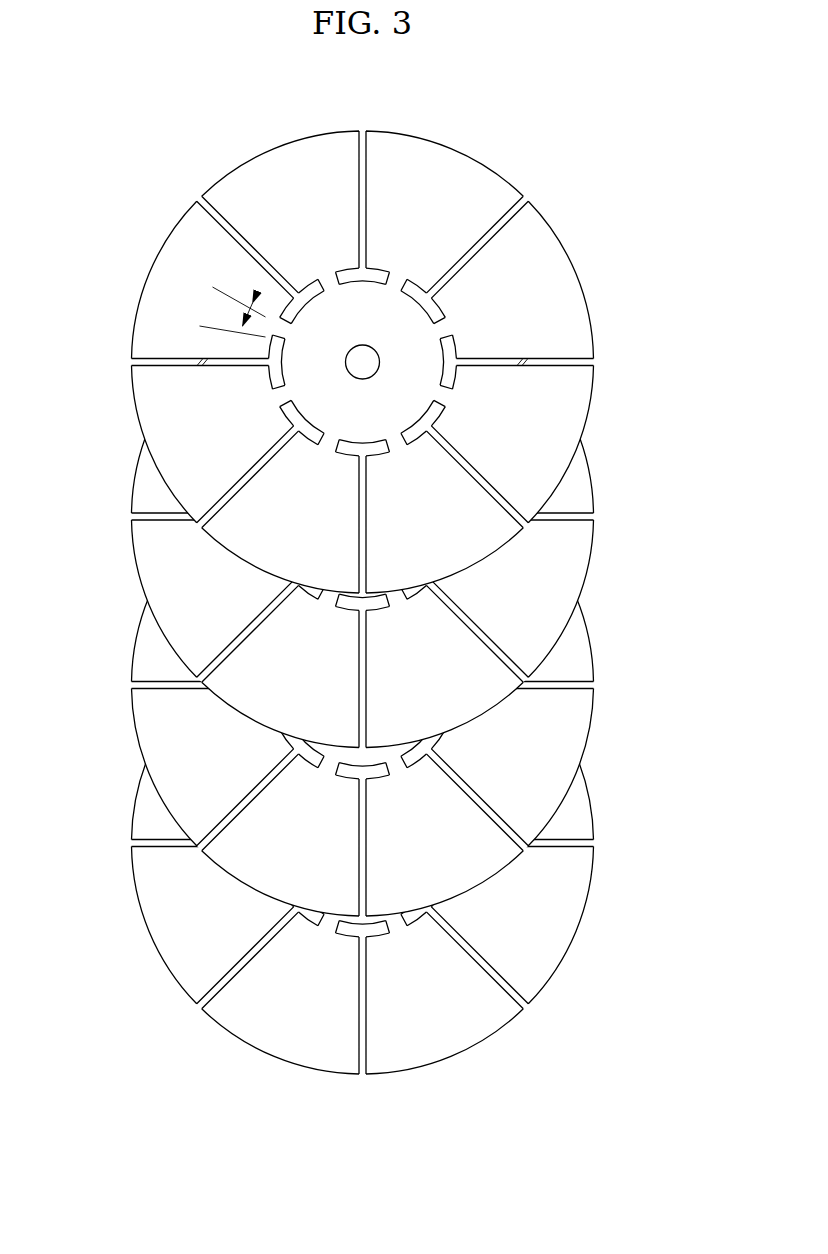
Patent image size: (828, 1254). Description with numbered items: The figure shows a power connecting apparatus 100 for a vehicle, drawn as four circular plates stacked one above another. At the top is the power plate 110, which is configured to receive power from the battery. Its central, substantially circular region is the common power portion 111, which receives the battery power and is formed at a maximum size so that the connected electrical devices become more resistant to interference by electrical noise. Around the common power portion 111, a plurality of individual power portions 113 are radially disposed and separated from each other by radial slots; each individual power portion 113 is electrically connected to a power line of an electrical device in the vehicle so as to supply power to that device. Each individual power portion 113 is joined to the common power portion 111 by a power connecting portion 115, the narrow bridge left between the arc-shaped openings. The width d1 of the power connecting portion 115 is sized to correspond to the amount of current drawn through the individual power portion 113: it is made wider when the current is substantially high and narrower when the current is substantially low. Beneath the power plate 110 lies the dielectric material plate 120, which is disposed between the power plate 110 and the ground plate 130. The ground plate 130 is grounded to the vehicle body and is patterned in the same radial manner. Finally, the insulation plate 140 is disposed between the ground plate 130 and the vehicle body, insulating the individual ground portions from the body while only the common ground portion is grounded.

The power connecting apparatus 100 is at (561, 132).
The power plate 110 is at (563, 227).
The common power portion 111 is at (356, 269).
The individual power portion 113 is at (363, 340).
The power connecting portion 115 is at (384, 284).
The width of the power connecting portion d1 is at (233, 312).
The dielectric material plate 120 is at (589, 447).
The ground plate 130 is at (589, 619).
The insulation plate 140 is at (589, 779).